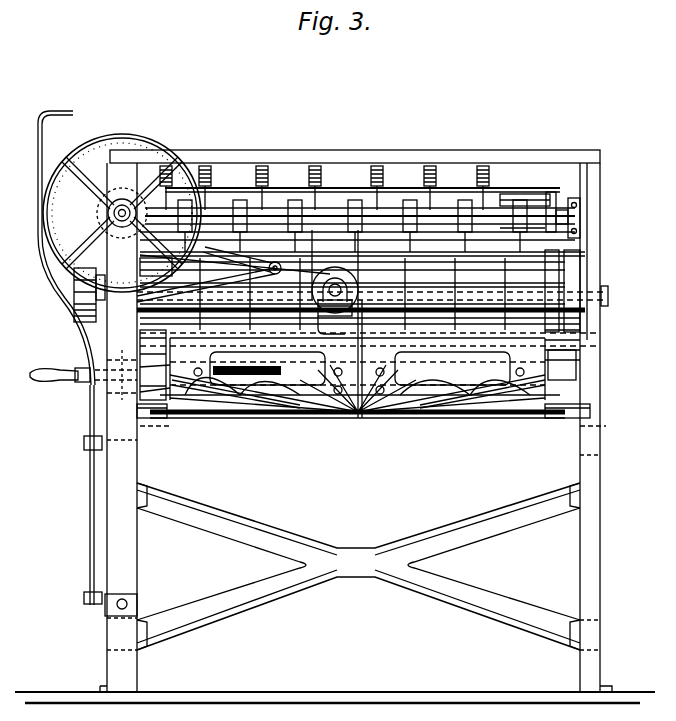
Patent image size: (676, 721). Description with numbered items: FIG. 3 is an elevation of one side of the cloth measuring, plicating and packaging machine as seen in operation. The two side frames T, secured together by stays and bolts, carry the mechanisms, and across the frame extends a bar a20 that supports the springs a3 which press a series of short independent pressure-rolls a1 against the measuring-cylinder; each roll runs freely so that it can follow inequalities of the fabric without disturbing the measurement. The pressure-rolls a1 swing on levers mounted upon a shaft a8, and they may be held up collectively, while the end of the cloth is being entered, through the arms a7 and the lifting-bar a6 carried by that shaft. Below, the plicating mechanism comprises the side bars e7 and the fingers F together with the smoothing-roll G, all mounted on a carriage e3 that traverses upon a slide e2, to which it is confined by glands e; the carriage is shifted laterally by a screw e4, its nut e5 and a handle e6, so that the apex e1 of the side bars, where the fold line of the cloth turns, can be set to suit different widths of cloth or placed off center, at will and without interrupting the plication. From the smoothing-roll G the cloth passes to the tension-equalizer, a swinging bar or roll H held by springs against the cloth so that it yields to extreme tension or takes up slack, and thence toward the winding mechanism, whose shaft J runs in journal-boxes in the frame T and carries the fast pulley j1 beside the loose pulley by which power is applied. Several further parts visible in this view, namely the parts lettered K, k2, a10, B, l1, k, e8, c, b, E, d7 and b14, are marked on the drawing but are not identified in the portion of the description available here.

The side frame T is at (335, 426).
The hand lever rod K is at (56, 358).
The rod bracket k2 is at (87, 444).
The winding shaft J is at (122, 213).
The fast pulley j1 is at (122, 203).
The bar a20 is at (362, 170).
The springs a3 is at (331, 188).
The pressure-rolls a1 is at (362, 216).
The lifting-bar a6 is at (528, 196).
The arms a7 is at (556, 200).
The end plate a10 is at (563, 223).
The shaft a8 is at (522, 235).
The cylinder B is at (372, 291).
The end bearing l1 is at (562, 305).
The smoothing-roll G is at (335, 273).
The swinging bar or roll H is at (235, 260).
The connecting bar k is at (206, 280).
The glands e is at (358, 334).
The carriage e3 is at (370, 366).
The hook e8 is at (331, 325).
The guide rail c is at (360, 389).
The screw e4 is at (267, 368).
The fingers F is at (359, 373).
The side bars e7 is at (357, 388).
The lower bar b is at (357, 412).
The end bracket E is at (363, 423).
The pin d7 is at (373, 434).
The slide e2 is at (358, 365).
The apex of the side bars e1 is at (155, 378).
The nut e5 is at (116, 369).
The handle e6 is at (60, 361).
The brake block b14 is at (82, 299).